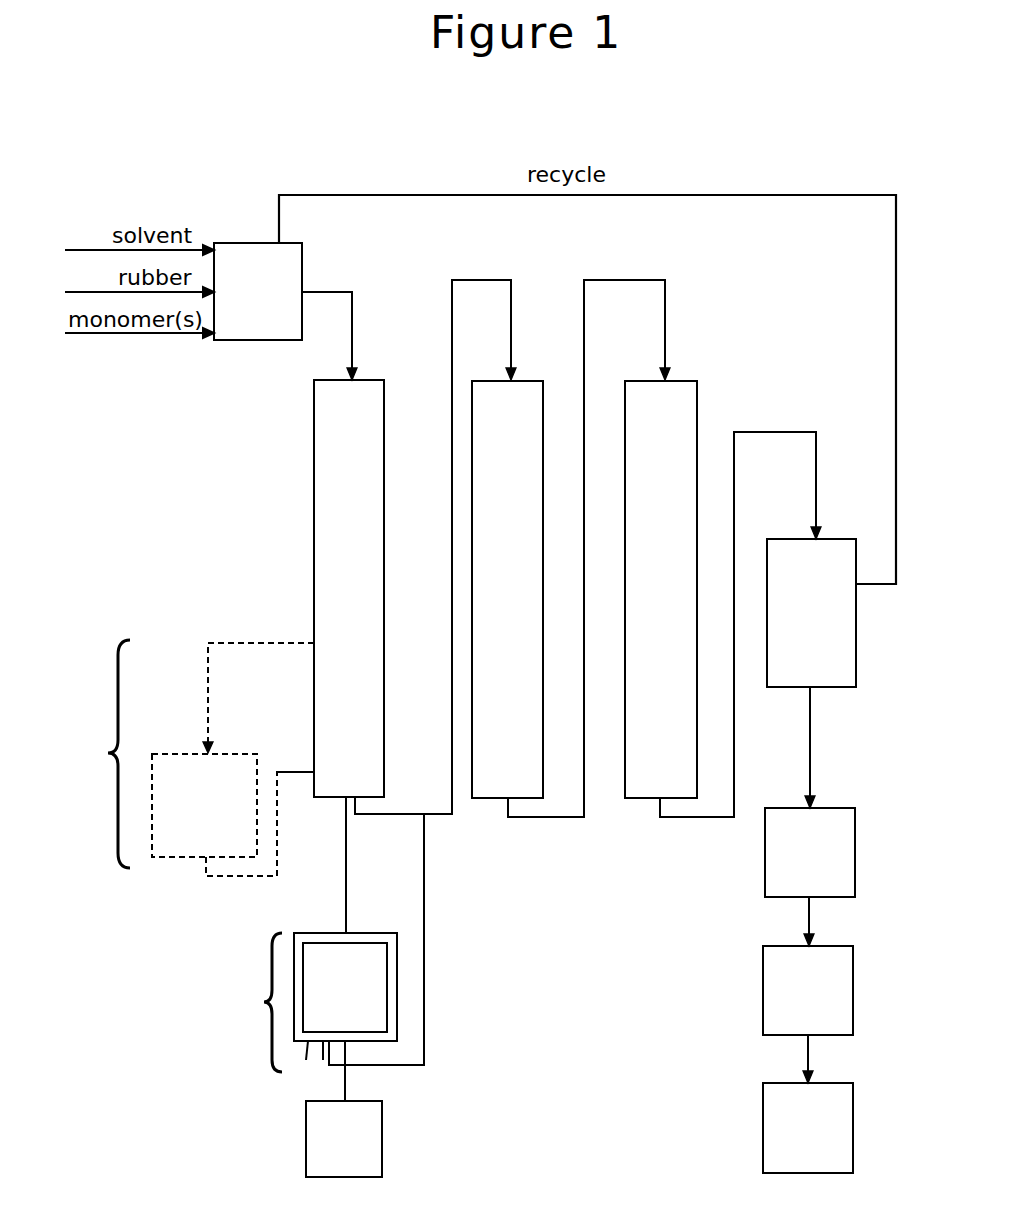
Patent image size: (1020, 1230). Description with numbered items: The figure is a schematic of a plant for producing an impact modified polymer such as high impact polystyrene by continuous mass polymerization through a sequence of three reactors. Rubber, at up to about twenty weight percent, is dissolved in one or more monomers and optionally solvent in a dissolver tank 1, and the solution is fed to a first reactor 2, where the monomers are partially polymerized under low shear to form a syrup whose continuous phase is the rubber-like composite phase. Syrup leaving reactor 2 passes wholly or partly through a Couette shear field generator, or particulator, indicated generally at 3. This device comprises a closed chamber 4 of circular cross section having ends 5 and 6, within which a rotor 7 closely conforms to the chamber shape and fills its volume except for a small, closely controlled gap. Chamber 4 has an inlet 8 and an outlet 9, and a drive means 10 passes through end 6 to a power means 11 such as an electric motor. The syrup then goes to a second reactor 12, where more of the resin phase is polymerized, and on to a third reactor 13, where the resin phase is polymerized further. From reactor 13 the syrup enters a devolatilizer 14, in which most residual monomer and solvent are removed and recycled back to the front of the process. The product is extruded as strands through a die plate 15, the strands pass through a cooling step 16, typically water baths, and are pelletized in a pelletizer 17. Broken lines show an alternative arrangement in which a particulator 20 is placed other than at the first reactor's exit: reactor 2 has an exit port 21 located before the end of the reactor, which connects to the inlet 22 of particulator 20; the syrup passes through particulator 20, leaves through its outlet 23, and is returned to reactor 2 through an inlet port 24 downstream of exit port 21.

The dissolver tank 1 is at (258, 291).
The first reactor 2 is at (349, 588).
The Couette shear field generator 3 is at (306, 943).
The closed chamber 4 is at (302, 1065).
The end of chamber 5 is at (322, 930).
The end of chamber 6 is at (321, 1064).
The rotor 7 is at (345, 987).
The inlet 8 is at (350, 930).
The outlet 9 is at (398, 954).
The drive means 10 is at (412, 1085).
The power means 11 is at (344, 1139).
The second reactor 12 is at (507, 589).
The third reactor 13 is at (661, 589).
The devolatilizer 14 is at (811, 613).
The die plate 15 is at (810, 852).
The cooling step 16 is at (808, 990).
The pelletizer 17 is at (808, 1128).
The particulator 20 is at (180, 762).
The exit port 21 is at (258, 681).
The inlet 22 is at (204, 805).
The outlet 23 is at (205, 862).
The inlet port 24 is at (307, 767).